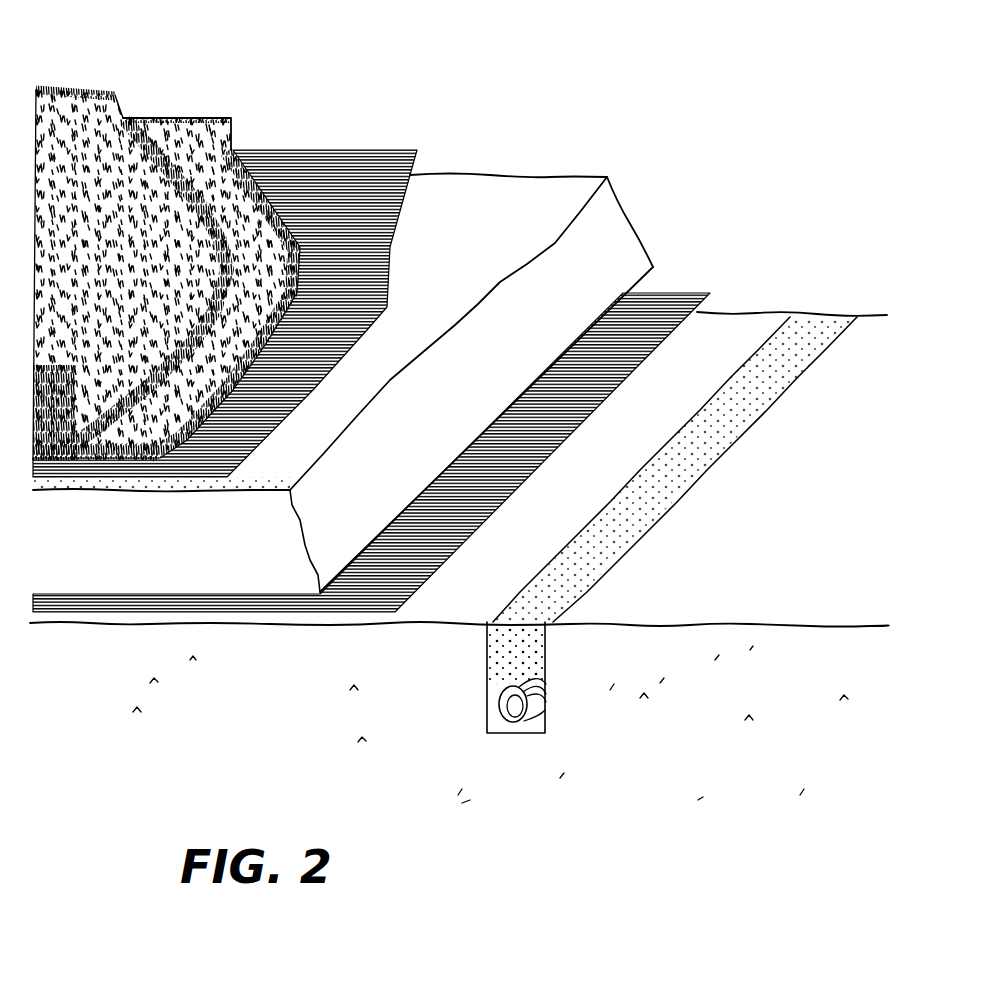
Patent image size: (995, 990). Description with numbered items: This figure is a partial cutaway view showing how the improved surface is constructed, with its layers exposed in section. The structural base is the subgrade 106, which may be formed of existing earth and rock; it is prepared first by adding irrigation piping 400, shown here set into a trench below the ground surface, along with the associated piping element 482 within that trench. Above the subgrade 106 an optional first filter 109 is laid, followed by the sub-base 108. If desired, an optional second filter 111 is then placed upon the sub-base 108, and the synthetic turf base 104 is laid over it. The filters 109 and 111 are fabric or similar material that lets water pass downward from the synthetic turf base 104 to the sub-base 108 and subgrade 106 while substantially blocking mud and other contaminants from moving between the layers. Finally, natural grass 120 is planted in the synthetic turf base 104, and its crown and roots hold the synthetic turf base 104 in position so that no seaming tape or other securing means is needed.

The natural grass 120 is at (68, 185).
The synthetic turf base 104 is at (197, 117).
The second filter 111 is at (378, 150).
The sub-base 108 is at (512, 175).
The subgrade 106 is at (727, 332).
The first filter 109 is at (348, 611).
The irrigation piping 400 is at (487, 663).
The cable / conduit 482 is at (517, 731).